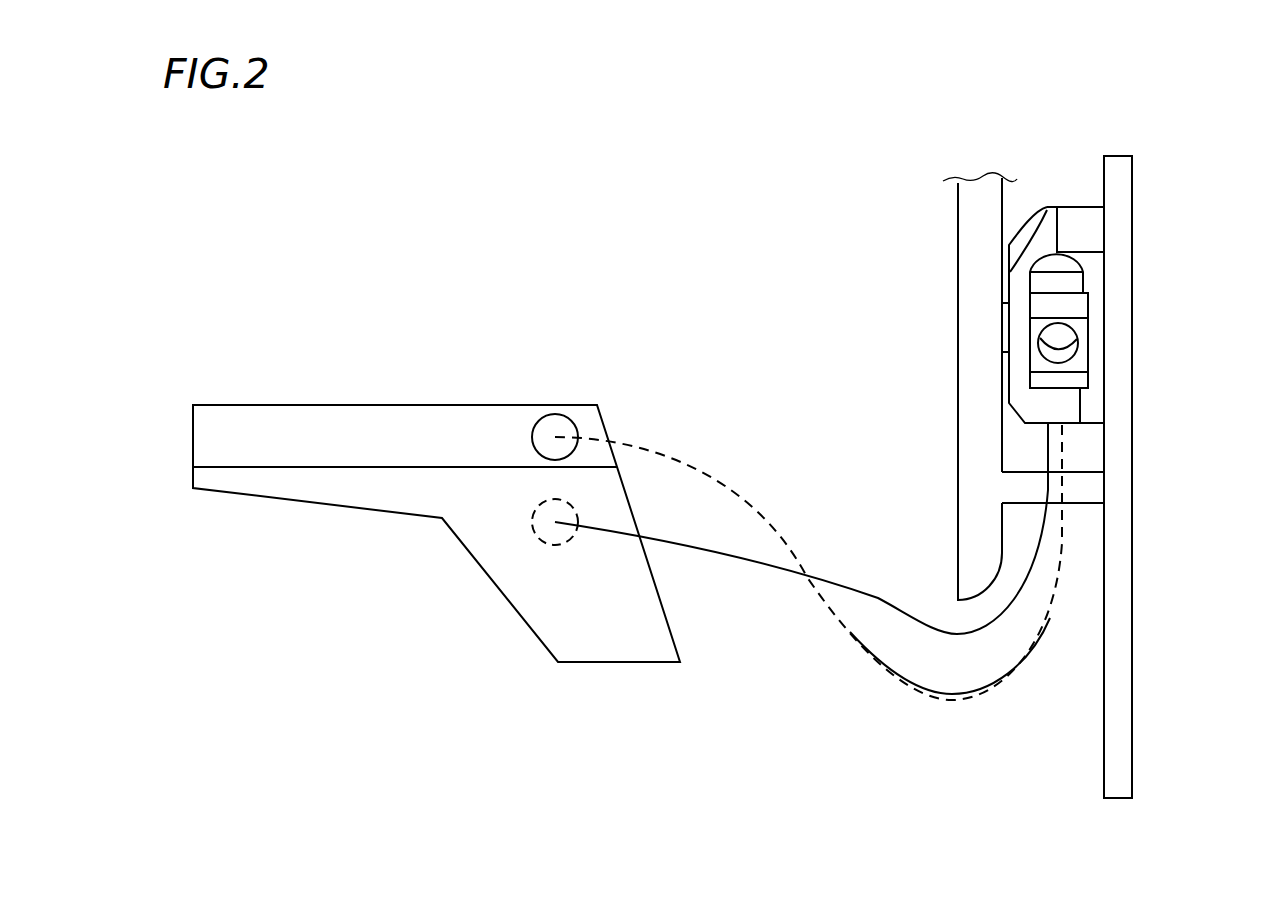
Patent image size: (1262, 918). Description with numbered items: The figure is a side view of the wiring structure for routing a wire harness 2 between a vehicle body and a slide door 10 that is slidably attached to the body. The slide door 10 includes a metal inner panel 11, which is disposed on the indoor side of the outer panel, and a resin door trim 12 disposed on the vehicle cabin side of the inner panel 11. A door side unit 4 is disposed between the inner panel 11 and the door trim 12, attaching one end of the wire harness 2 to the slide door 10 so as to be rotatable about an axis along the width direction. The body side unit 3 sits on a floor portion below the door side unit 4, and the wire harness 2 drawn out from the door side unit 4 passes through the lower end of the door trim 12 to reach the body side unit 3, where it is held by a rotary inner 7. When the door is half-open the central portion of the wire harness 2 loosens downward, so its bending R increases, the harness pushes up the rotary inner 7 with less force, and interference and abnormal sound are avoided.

The wire harness 2 is at (808, 594).
The body side unit 3 is at (472, 405).
The door side unit 4 is at (1061, 208).
The rotary inner 7 is at (570, 412).
The slide door 10 is at (1079, 510).
The inner panel 11 is at (1118, 197).
The door trim 12 is at (972, 283).
The bending R is at (909, 689).